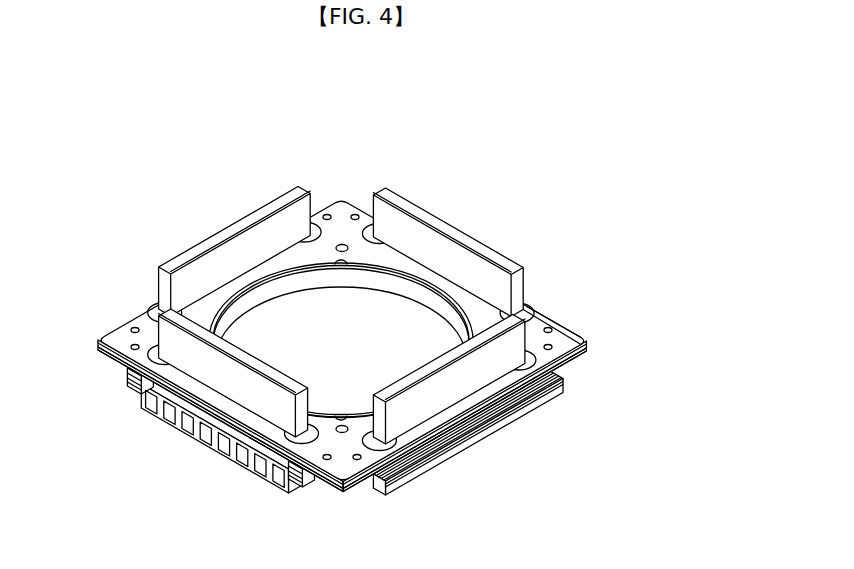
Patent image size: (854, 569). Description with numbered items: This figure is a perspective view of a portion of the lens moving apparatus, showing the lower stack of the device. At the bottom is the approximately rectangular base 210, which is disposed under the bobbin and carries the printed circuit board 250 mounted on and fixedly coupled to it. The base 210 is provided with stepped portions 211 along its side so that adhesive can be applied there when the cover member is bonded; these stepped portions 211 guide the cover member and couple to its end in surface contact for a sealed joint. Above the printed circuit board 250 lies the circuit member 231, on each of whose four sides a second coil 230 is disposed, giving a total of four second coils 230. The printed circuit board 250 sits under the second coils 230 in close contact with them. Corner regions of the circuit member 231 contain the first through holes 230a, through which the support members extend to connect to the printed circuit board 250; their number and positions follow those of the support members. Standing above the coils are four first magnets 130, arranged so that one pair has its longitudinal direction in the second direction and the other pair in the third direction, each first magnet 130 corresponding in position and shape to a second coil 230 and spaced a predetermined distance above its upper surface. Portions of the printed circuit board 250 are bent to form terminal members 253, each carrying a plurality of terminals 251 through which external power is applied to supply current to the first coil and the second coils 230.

The first magnet 130 is at (168, 312).
The base 210 is at (423, 462).
The stepped portion 211 is at (470, 433).
The second coil 230 is at (543, 362).
The first through hole 230a is at (357, 210).
The circuit member 231 is at (552, 316).
The printed circuit board 250 is at (345, 487).
The terminal 251 is at (267, 468).
The terminal member 253 is at (216, 443).